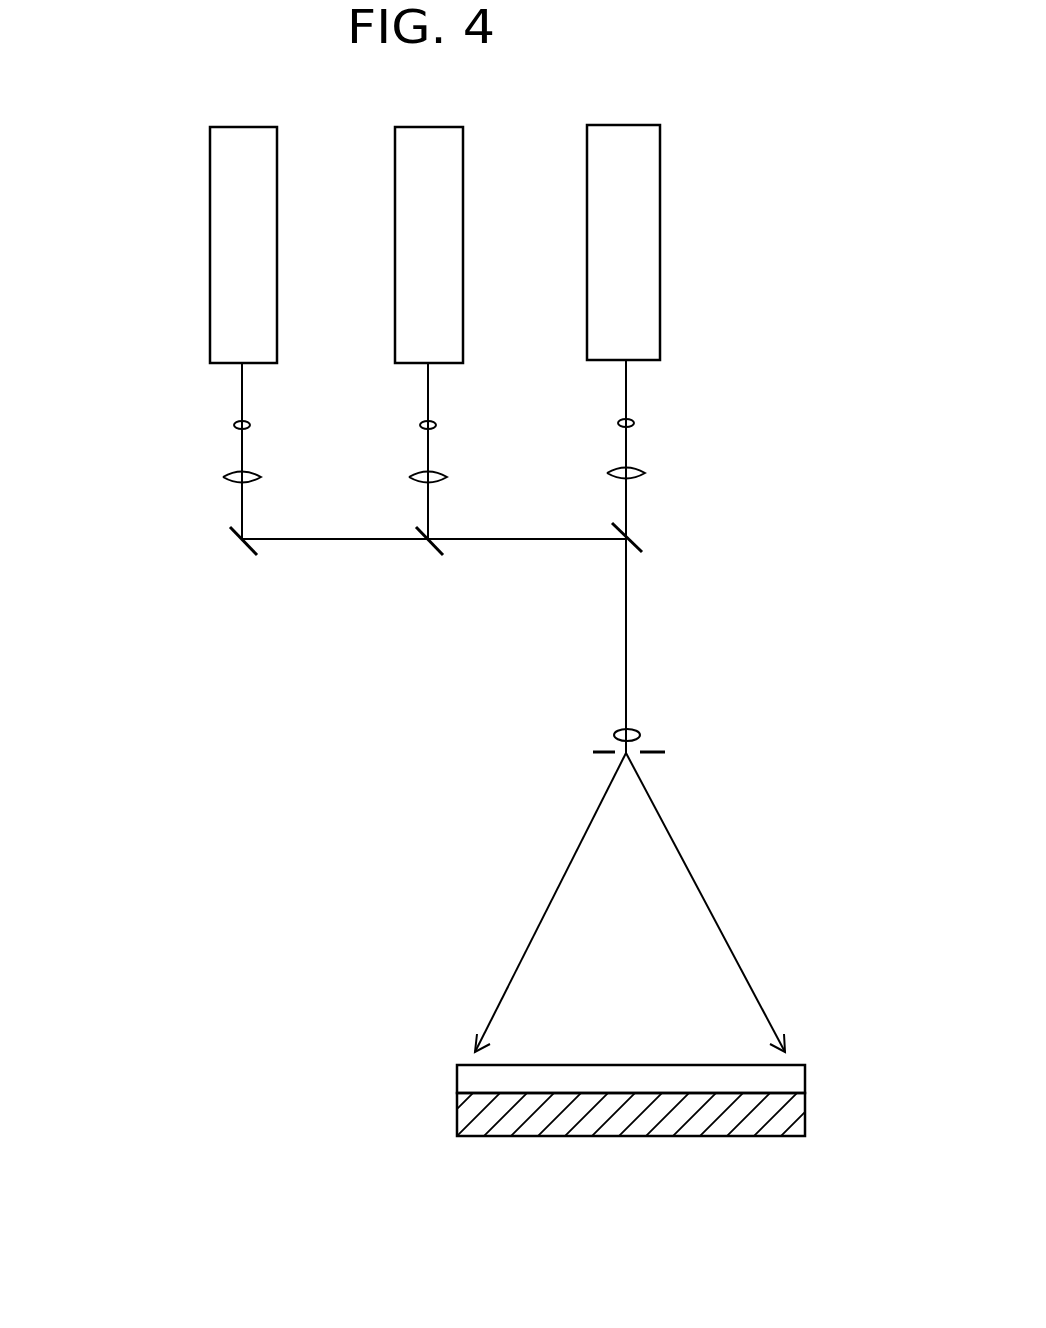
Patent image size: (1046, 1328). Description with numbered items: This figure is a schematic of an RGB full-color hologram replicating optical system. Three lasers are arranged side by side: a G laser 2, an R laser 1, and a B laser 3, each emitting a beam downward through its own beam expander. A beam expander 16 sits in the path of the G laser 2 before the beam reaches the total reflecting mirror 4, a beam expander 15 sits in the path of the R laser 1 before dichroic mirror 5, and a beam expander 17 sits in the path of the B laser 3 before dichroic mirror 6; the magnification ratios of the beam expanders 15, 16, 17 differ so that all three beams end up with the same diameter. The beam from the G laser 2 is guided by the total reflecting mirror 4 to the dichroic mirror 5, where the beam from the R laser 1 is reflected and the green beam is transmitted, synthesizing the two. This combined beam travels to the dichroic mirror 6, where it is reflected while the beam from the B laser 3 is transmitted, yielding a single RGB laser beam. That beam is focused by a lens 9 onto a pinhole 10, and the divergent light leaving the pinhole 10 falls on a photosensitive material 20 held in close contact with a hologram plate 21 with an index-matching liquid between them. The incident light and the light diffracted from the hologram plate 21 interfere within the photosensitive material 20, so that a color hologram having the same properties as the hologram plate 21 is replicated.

The R laser 1 is at (463, 243).
The G laser 2 is at (277, 243).
The B laser 3 is at (660, 243).
The total reflecting mirror 4 is at (234, 541).
The dichroic mirror 5 is at (433, 547).
The dichroic mirror 6 is at (619, 535).
The lens 9 is at (640, 735).
The pinhole 10 is at (638, 756).
The beam expander 15 is at (410, 463).
The beam expander 16 is at (220, 463).
The beam expander 17 is at (610, 460).
The photosensitive material 20 is at (457, 1078).
The hologram plate 21 is at (457, 1113).